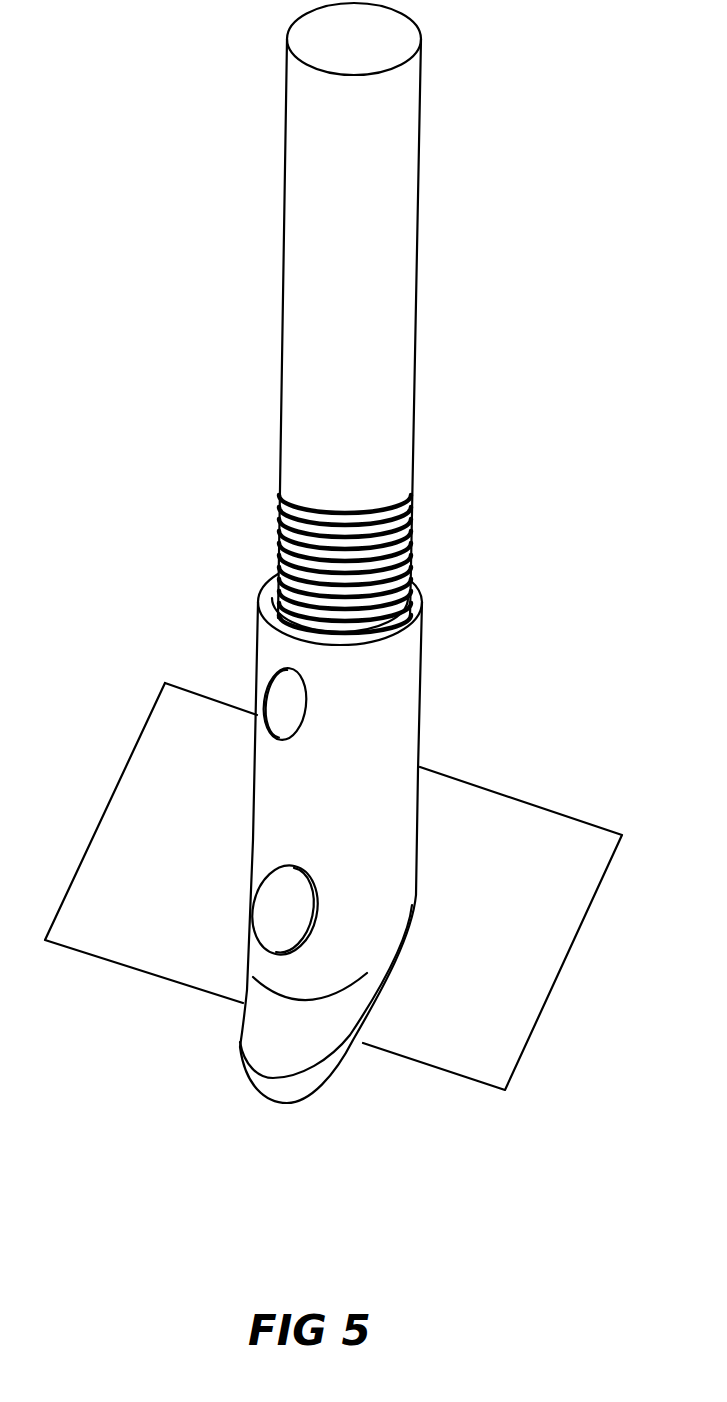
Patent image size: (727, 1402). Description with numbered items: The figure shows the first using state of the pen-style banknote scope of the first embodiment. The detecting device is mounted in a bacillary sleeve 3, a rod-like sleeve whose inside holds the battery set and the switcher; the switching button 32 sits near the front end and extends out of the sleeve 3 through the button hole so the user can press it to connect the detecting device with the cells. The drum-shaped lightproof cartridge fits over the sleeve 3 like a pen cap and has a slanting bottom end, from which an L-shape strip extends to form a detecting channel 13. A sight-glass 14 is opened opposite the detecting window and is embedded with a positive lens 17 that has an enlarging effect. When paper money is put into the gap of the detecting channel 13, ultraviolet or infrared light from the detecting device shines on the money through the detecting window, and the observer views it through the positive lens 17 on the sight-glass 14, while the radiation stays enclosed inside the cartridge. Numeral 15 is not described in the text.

The bacillary sleeve 3 is at (293, 321).
The tubular body 15 is at (262, 731).
The switching button 32 is at (273, 690).
The sight-glass 14 is at (285, 930).
The positive lens 17 is at (283, 869).
The detecting channel 13 is at (360, 1043).